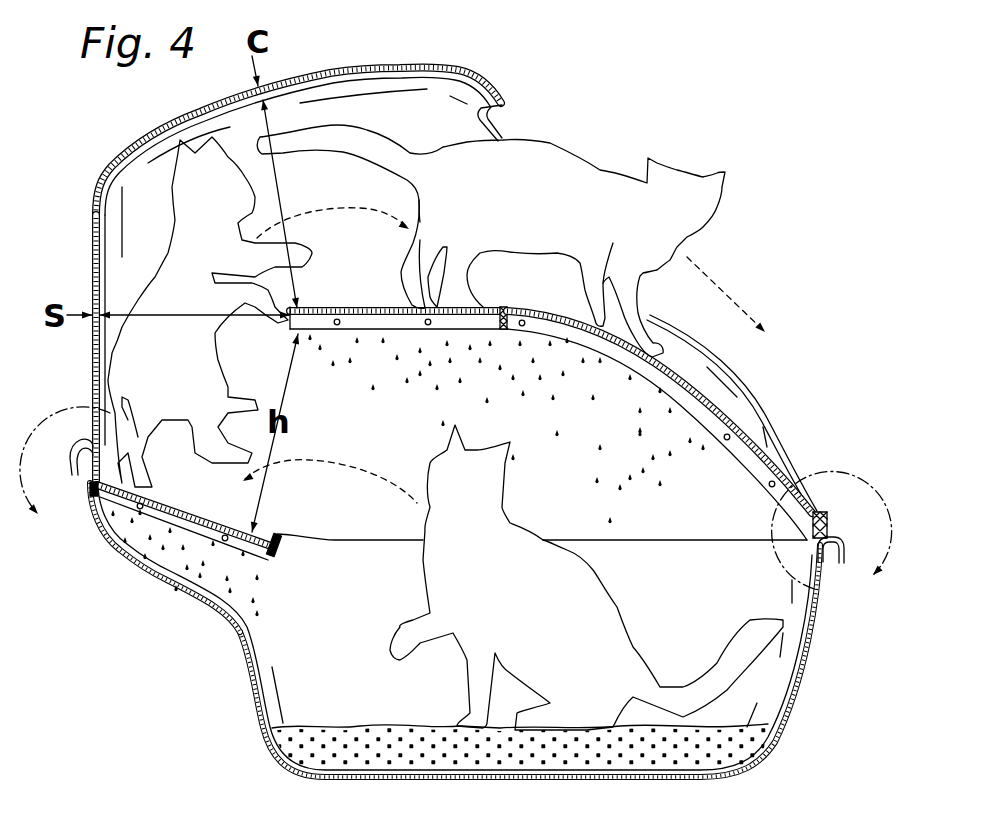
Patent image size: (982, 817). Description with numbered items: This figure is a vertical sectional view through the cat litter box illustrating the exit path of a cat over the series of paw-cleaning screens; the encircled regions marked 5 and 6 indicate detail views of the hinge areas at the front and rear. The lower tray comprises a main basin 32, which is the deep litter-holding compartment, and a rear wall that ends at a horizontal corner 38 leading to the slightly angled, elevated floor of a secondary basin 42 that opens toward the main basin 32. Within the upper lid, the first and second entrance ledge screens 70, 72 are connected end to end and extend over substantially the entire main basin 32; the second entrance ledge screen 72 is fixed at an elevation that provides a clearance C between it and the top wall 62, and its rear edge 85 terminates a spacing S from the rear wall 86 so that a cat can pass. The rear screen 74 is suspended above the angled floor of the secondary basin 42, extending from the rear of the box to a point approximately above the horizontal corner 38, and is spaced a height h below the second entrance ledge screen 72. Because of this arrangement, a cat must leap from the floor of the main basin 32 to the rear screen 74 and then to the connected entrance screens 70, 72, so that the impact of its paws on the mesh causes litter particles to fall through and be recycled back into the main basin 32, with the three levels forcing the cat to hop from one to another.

The main basin 32 is at (277, 703).
The horizontal corner 38 is at (243, 607).
The secondary basin 42 is at (163, 560).
The top wall 62 is at (333, 72).
The first entrance ledge screen 70 is at (740, 423).
The second entrance ledge screen 72 is at (370, 307).
The rear screen 74 is at (275, 534).
The rear edge 85 is at (297, 332).
The rear wall 86 is at (93, 240).
The section view 5 indicator 5 is at (98, 528).
The section view 6 indicator 6 is at (823, 597).